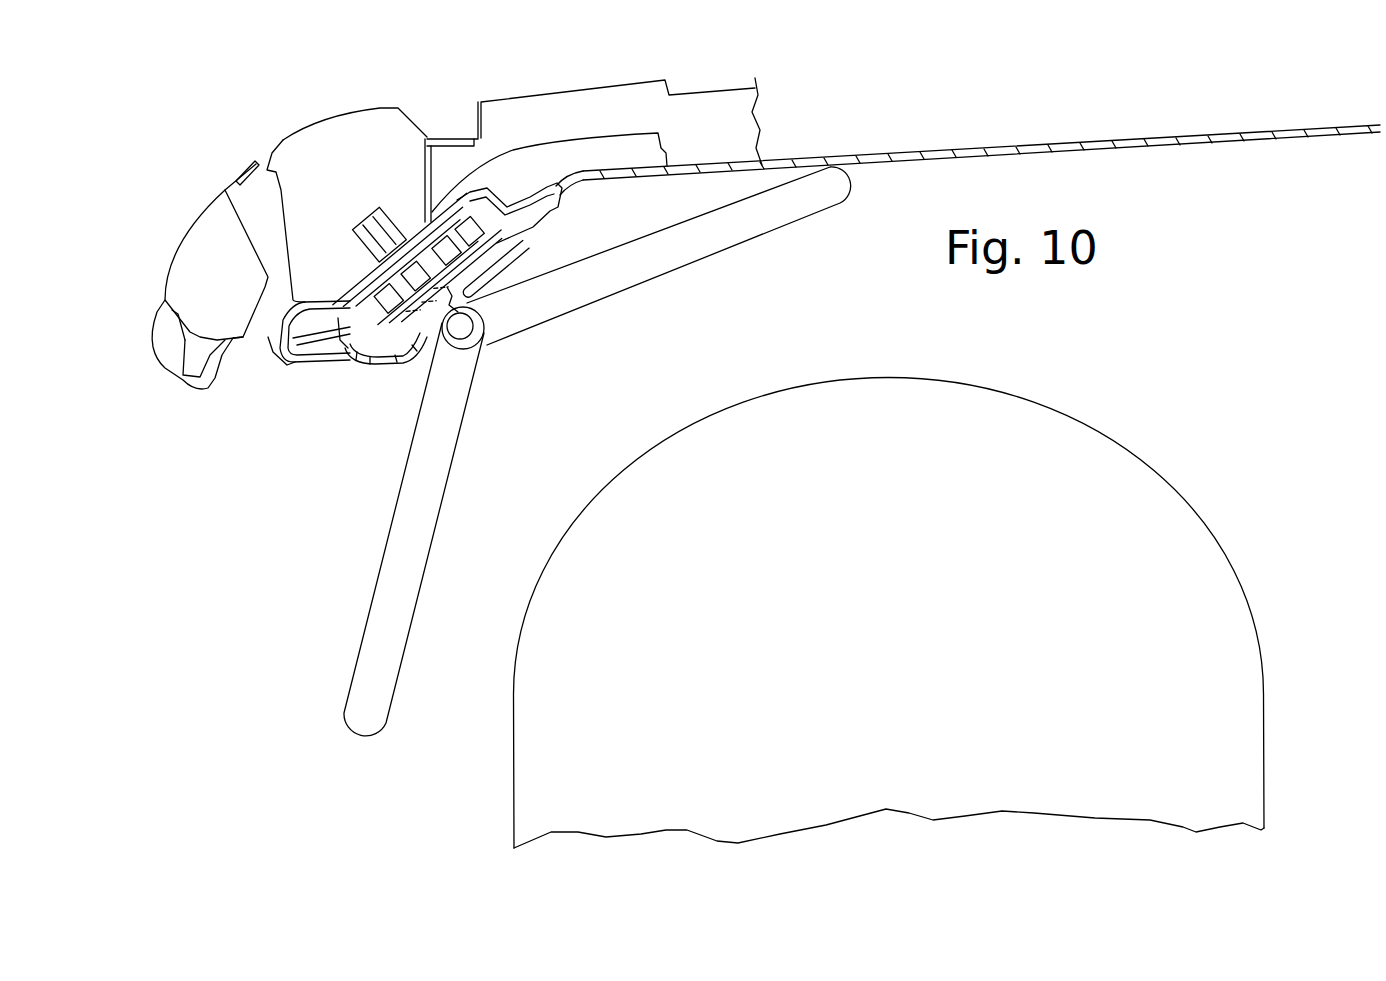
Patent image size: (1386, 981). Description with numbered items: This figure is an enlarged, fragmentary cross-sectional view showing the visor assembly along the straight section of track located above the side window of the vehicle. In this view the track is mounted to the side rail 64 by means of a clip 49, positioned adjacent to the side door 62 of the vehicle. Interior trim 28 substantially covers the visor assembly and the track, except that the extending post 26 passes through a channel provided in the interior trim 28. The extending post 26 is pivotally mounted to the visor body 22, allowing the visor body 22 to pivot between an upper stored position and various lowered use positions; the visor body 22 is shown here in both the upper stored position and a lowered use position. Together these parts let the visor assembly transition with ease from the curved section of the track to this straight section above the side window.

The visor body 22 is at (600, 287).
The extending post 26 is at (482, 337).
The interior trim 28 is at (957, 150).
The clip 49 is at (383, 216).
The side door 62 is at (195, 263).
The side rail 64 is at (342, 135).